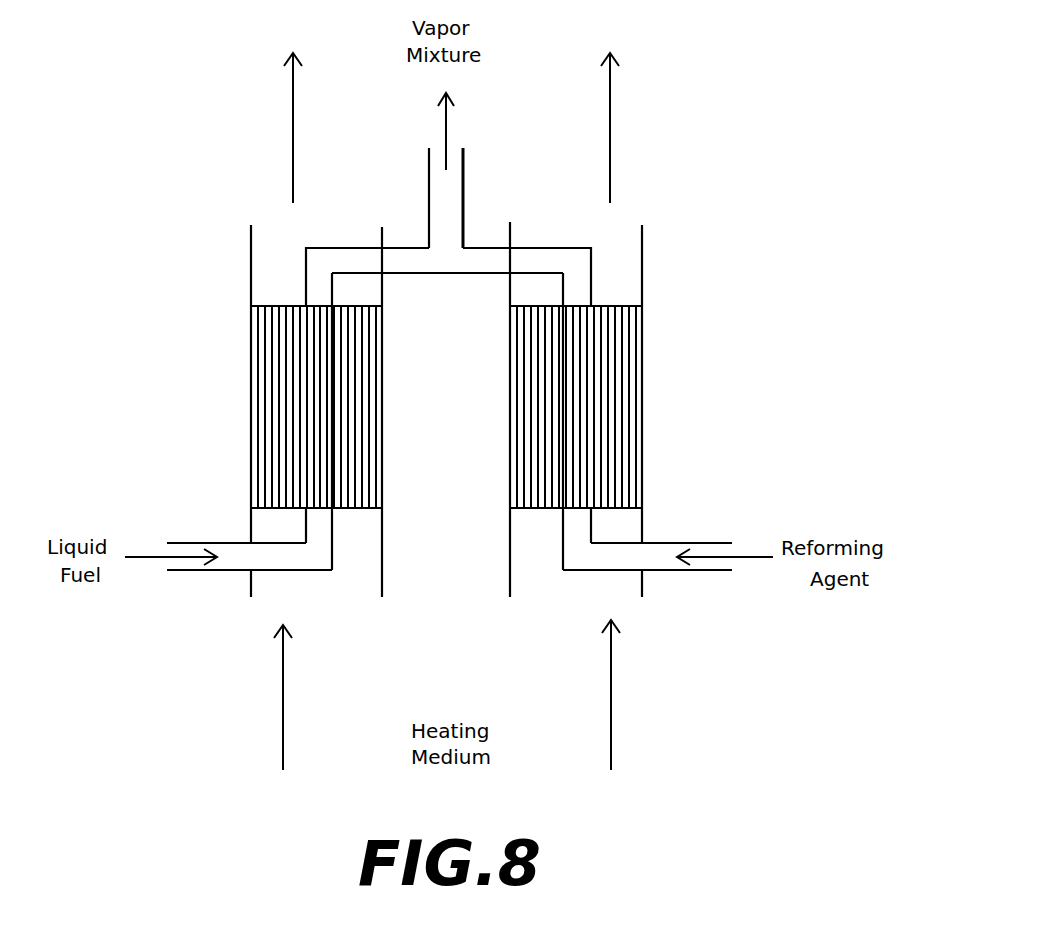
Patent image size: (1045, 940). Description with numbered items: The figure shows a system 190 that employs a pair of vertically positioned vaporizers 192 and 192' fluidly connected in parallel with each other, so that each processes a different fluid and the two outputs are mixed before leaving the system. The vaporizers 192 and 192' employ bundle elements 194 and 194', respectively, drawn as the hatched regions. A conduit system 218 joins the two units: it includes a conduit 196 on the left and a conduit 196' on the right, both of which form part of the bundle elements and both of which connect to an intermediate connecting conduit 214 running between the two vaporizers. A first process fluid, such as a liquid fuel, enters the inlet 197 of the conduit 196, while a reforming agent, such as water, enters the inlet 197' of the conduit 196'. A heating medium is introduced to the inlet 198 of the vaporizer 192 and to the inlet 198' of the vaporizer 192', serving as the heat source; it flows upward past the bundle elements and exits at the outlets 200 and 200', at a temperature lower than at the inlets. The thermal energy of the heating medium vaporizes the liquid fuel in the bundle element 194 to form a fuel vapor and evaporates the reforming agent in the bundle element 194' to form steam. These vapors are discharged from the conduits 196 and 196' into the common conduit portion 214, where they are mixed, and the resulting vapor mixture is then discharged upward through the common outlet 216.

The system 190 is at (778, 280).
The vaporizer 192 is at (267, 378).
The vaporizer 192' is at (630, 387).
The bundle element 194 is at (276, 378).
The bundle element 194' is at (616, 387).
The conduit 196 is at (249, 598).
The conduit 196' is at (647, 613).
The inlet 197 is at (208, 590).
The inlet 197' is at (699, 518).
The inlet 198 is at (353, 450).
The inlet 198' is at (565, 626).
The outlet 200 is at (367, 374).
The outlet 200' is at (589, 380).
The intermediate connecting conduit 214 is at (457, 280).
The common outlet 216 is at (456, 160).
The conduit system 218 is at (500, 201).